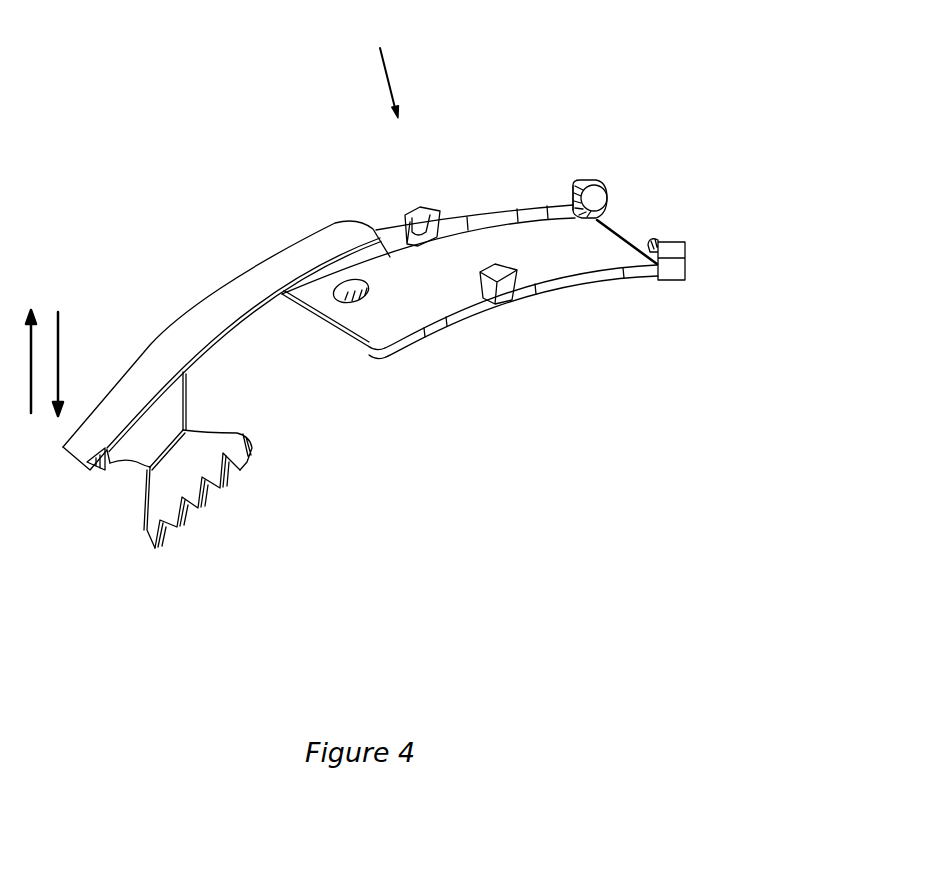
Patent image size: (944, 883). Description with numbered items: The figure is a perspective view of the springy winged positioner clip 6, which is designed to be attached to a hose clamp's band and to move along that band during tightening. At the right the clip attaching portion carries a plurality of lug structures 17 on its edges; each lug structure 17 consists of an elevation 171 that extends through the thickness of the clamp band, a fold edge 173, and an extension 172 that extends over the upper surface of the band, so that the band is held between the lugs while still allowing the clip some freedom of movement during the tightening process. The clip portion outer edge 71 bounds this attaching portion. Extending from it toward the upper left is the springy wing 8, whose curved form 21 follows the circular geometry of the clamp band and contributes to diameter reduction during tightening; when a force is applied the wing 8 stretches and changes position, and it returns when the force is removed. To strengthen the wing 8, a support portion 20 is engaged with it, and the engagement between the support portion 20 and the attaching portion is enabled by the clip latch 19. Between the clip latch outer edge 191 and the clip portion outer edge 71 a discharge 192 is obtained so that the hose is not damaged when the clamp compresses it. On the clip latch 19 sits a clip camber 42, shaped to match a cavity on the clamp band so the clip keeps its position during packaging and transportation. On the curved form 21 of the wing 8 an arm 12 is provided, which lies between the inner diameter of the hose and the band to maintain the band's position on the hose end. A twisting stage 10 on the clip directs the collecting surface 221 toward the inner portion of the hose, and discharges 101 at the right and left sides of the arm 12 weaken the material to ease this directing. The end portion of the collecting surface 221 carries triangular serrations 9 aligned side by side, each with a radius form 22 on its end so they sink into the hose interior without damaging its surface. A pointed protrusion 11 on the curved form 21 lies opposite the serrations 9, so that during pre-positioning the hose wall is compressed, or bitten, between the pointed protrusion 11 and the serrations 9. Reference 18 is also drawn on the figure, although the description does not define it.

The positioner clip 6 is at (384, 71).
The wing 8 is at (217, 300).
The curved form 21 is at (177, 338).
The support portion 20 is at (317, 283).
The clip camber 42 is at (350, 284).
The arm 12 is at (157, 428).
The pointed protrusion 11 is at (83, 474).
The twisting stage 10 is at (141, 474).
The discharge 101 is at (127, 487).
The radius form 22 is at (160, 553).
The collecting surface 221 is at (183, 468).
The serrations 9 is at (242, 467).
The clip latch 19 is at (438, 302).
The clip latch outer edge 191 is at (400, 350).
The discharge 192 is at (480, 327).
The clip portion outer edge 71 is at (543, 300).
The top band 18 is at (512, 210).
The lug structure 17 is at (607, 193).
The elevation 171 is at (570, 185).
The extension 172 is at (607, 202).
The fold edge 173 is at (593, 178).